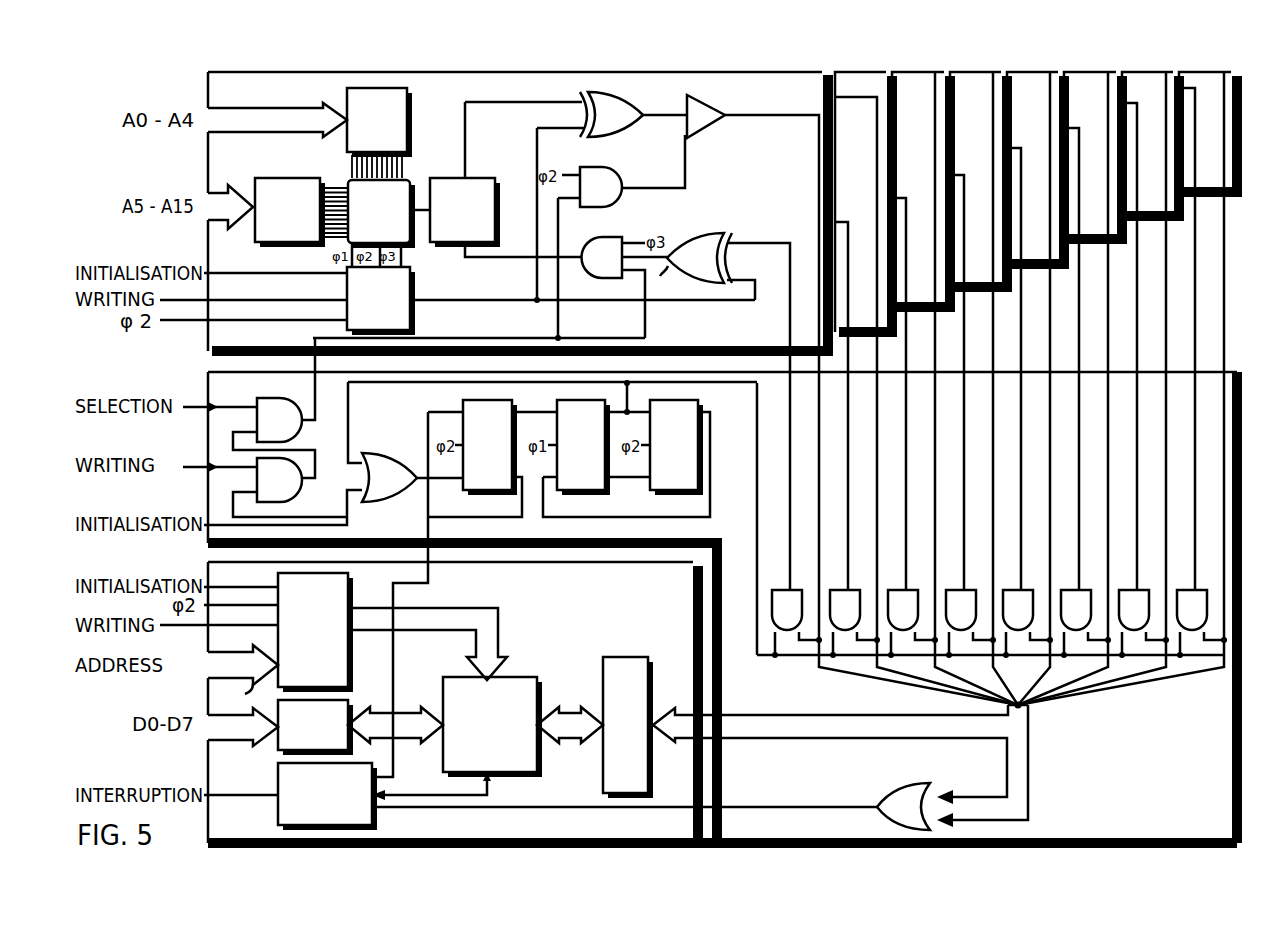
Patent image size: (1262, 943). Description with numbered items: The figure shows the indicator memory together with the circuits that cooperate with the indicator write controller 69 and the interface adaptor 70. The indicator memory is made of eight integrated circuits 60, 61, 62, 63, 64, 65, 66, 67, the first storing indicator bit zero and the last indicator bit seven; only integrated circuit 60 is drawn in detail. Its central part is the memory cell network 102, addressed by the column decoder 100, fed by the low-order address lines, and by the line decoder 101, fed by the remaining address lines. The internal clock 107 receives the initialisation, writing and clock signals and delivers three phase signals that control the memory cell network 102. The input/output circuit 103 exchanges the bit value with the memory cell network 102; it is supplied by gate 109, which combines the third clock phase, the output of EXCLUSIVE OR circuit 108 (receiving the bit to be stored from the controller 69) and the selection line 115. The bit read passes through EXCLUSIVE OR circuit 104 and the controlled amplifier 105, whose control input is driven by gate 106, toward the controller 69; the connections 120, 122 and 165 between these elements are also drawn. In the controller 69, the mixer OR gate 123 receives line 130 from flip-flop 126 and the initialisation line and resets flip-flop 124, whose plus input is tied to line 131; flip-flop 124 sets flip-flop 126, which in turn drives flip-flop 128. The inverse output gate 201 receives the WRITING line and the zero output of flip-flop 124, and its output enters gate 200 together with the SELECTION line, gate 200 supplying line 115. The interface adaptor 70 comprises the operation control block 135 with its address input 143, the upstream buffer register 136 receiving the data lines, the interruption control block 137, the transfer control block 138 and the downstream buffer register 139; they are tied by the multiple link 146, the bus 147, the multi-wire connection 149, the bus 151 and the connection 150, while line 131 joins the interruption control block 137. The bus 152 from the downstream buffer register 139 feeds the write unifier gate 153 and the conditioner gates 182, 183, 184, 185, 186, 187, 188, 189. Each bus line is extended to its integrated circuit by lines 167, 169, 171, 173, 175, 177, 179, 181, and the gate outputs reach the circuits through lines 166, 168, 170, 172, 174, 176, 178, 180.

The integrated circuit 60 is at (208, 86).
The integrated circuit 61 is at (862, 338).
The integrated circuit 62 is at (920, 313).
The integrated circuit 63 is at (978, 293).
The integrated circuit 64 is at (1035, 270).
The integrated circuit 65 is at (1093, 245).
The integrated circuit 66 is at (1150, 222).
The integrated circuit 67 is at (1208, 198).
The indicator write controller 69 is at (208, 368).
The interface adaptor 70 is at (208, 564).
The column decoder 100 is at (410, 102).
The line decoder 101 is at (282, 178).
The memory cell network 102 is at (412, 248).
The input/output circuit 103 is at (480, 178).
The EXCLUSIVE OR circuit 104 is at (672, 107).
The controlled amplifier 105 is at (718, 107).
The gate 106 is at (620, 168).
The internal clock 107 is at (412, 330).
The EXCLUSIVE OR circuit 108 is at (710, 233).
The gate 109 is at (604, 237).
The line 115 is at (464, 338).
The connection line 120 is at (676, 116).
The connection line 122 is at (660, 276).
The mixer OR gate 123 is at (396, 453).
The flip-flop 124 is at (504, 505).
The flip-flop 126 is at (597, 505).
The flip-flop 128 is at (690, 505).
The line 130 is at (756, 444).
The line 131 is at (398, 666).
The operation control block 135 is at (356, 576).
The upstream buffer register 136 is at (352, 700).
The interruption control block 137 is at (376, 820).
The transfer control block 138 is at (543, 677).
The downstream buffer register 139 is at (603, 674).
The address input 143 is at (235, 696).
The multiple link 146 is at (478, 608).
The bus 147 is at (398, 707).
The multi-wire connection 149 is at (436, 794).
The connection 150 is at (564, 807).
The bus 151 is at (564, 714).
The bus 152 is at (800, 739).
The write unifier gate 153 is at (896, 783).
The connection line 165 is at (795, 257).
The line 166 is at (790, 456).
The line 167 is at (819, 456).
The line 168 is at (848, 456).
The line 169 is at (877, 456).
The line 170 is at (906, 456).
The line 171 is at (935, 456).
The line 172 is at (964, 456).
The line 173 is at (993, 456).
The line 174 is at (1021, 456).
The line 175 is at (1050, 456).
The line 176 is at (1079, 456).
The line 177 is at (1108, 456).
The line 178 is at (1137, 456).
The line 179 is at (1166, 456).
The line 180 is at (1195, 456).
The line 181 is at (1224, 456).
The conditioner gate 182 is at (799, 590).
The conditioner gate 183 is at (857, 590).
The conditioner gate 184 is at (915, 590).
The conditioner gate 185 is at (973, 590).
The conditioner gate 186 is at (1030, 590).
The conditioner gate 187 is at (1088, 590).
The conditioner gate 188 is at (1146, 590).
The conditioner gate 189 is at (1204, 590).
The gate 200 is at (294, 434).
The inverse output gate 201 is at (294, 498).